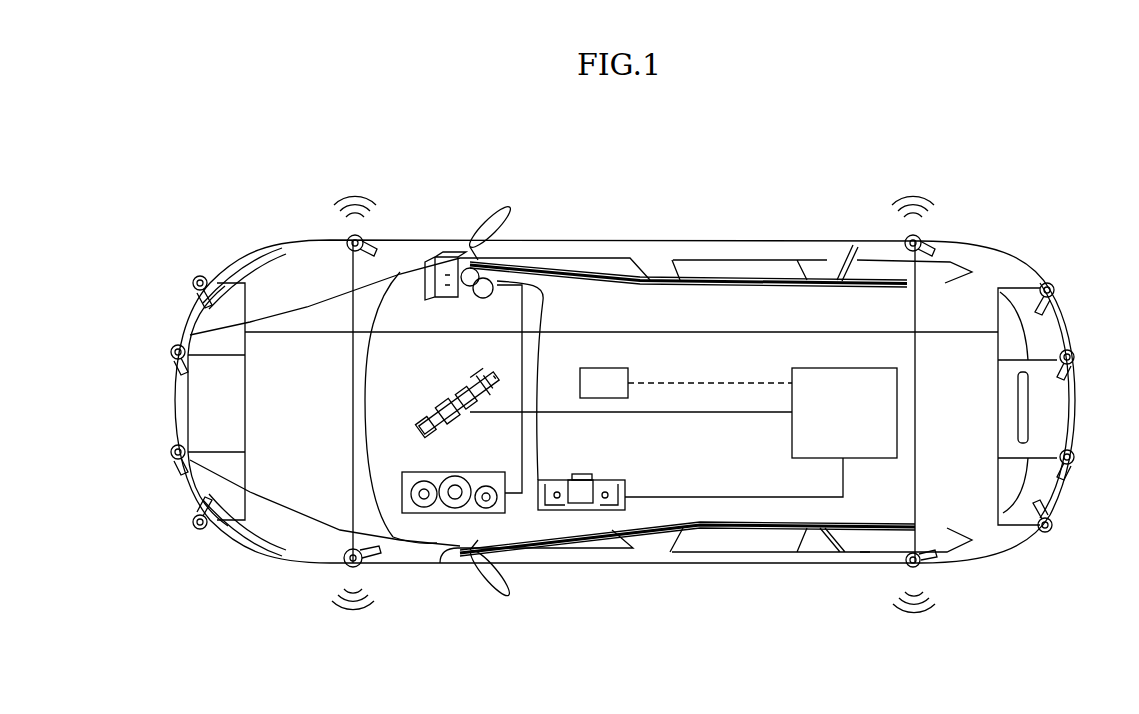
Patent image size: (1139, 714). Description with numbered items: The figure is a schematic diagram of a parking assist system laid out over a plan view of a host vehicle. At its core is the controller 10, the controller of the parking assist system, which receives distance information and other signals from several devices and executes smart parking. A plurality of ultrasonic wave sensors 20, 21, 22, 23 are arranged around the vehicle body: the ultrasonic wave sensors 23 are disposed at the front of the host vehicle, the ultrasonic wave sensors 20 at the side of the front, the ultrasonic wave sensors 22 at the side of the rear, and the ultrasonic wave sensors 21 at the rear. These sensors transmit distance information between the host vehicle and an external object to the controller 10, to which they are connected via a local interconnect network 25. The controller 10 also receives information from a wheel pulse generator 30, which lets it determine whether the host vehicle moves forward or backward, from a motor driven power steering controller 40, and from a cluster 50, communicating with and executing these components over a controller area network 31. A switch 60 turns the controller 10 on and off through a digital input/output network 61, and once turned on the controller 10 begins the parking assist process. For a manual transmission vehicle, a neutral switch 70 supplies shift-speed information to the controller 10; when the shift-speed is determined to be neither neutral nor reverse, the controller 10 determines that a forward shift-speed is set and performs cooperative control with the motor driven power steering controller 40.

The controller 10 is at (877, 470).
The ultrasonic wave sensors 20 is at (342, 238).
The ultrasonic wave sensors 21 is at (1076, 457).
The ultrasonic wave sensors 22 is at (905, 245).
The ultrasonic wave sensors 23 is at (169, 453).
The local interconnect network (LIN) 25 is at (695, 332).
The wheel pulse generator 30 is at (455, 255).
The controller area network (CAN) 31 is at (657, 414).
The motor driven power steering (MDPS) controller 40 is at (442, 402).
The cluster 50 is at (422, 513).
The switch 60 is at (583, 513).
The digital input/output (DIO) network 61 is at (742, 498).
The neutral switch 70 is at (600, 368).